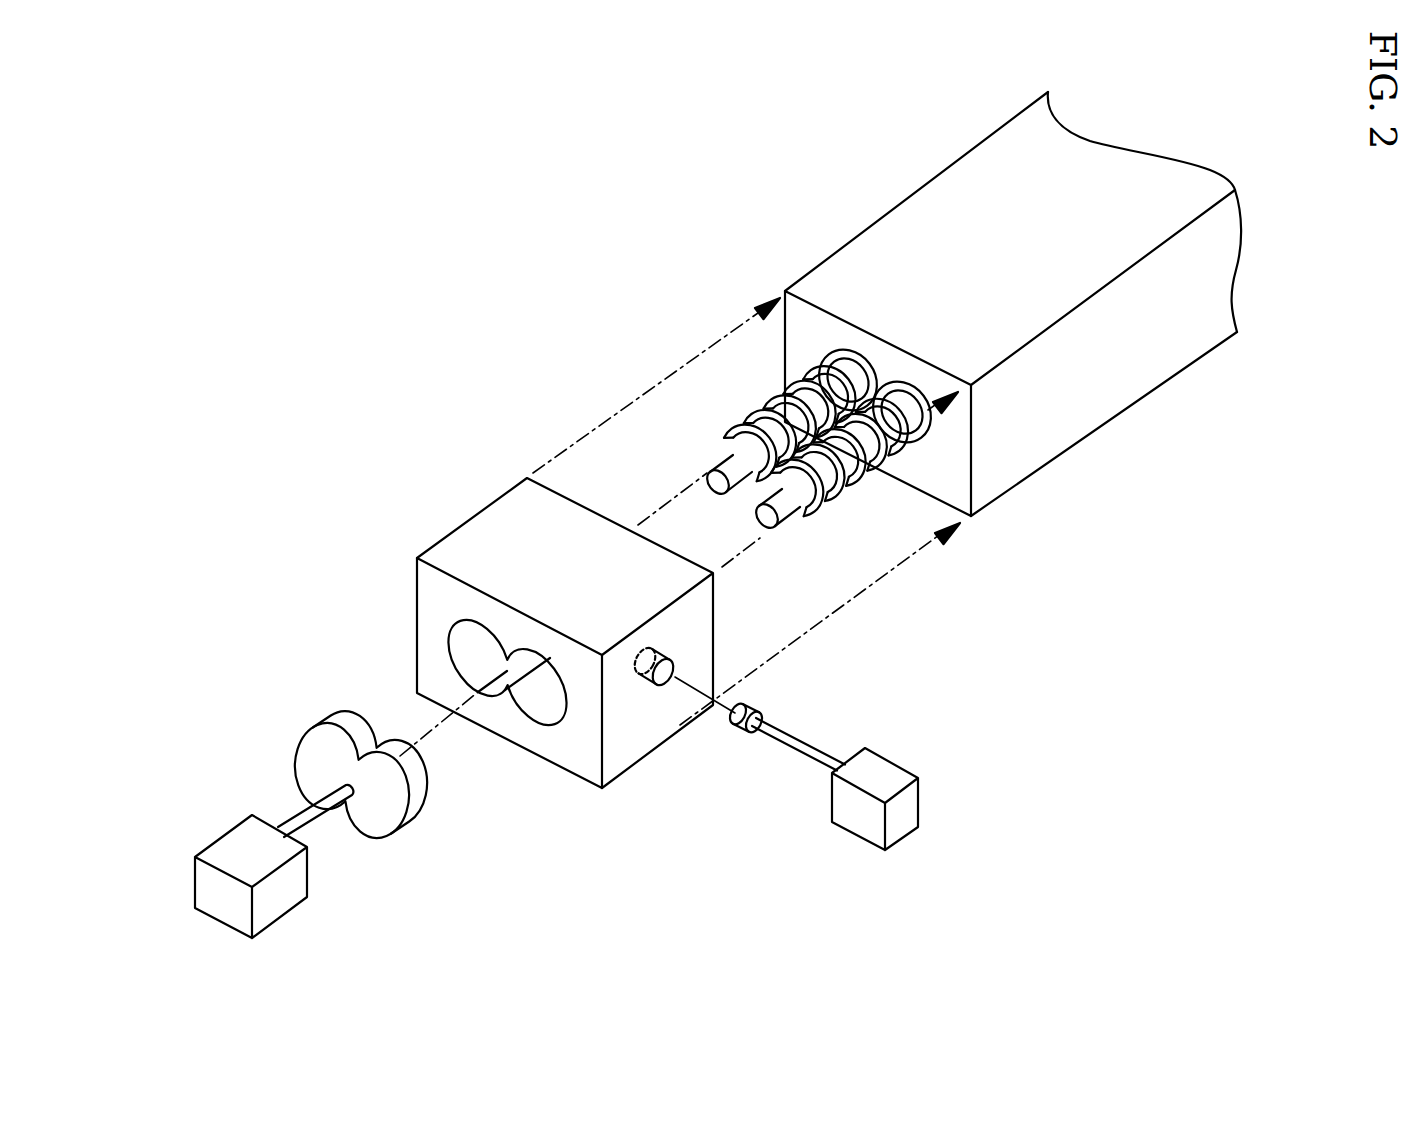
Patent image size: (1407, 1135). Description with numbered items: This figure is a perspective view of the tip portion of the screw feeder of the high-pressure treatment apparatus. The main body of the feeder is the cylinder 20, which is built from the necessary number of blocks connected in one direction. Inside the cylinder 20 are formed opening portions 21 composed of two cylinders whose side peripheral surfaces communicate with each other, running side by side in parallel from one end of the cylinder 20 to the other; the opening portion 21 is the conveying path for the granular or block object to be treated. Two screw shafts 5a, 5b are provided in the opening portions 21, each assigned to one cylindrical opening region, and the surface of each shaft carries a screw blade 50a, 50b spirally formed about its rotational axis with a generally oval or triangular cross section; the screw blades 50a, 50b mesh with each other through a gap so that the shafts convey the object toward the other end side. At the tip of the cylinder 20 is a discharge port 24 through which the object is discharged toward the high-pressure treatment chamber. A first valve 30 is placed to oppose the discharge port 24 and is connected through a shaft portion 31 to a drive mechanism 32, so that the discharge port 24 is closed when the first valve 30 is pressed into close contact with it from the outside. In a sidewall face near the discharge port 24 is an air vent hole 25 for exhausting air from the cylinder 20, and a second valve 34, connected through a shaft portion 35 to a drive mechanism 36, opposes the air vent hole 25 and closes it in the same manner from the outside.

The cylinder 20 is at (1177, 352).
The opening portion 21 is at (905, 463).
The discharge port 24 is at (535, 703).
The air vent hole 25 is at (667, 687).
The first valve 30 is at (308, 737).
The shaft portion 31 is at (287, 808).
The drive mechanism 32 is at (214, 840).
The second valve 34 is at (753, 706).
The shaft portion 35 is at (798, 757).
The drive mechanism 36 is at (892, 764).
The screw blade 50a is at (748, 427).
The screw blade 50b is at (835, 503).
The screw shaft 5a is at (700, 427).
The screw shaft 5b is at (793, 537).